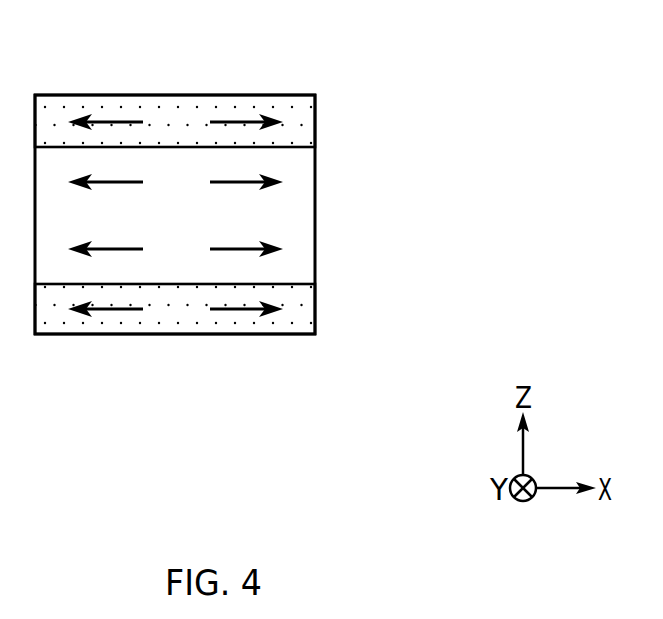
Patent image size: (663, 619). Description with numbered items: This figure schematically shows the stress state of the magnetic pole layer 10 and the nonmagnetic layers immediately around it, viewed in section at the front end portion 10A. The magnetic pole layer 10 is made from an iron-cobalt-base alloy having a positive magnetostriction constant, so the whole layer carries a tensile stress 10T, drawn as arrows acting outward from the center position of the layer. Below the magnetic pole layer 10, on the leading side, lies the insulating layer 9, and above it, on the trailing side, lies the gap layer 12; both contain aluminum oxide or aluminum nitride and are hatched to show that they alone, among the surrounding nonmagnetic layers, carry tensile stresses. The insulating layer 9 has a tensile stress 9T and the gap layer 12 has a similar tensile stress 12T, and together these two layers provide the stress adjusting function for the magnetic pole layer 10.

The front end portion 10A is at (315, 213).
The magnetic pole layer 10 is at (175, 214).
The gap layer 12 is at (315, 122).
The insulating layer 9 is at (315, 307).
The tensile stress 12T is at (108, 122).
The tensile stress 10T is at (117, 248).
The tensile stress 9T is at (112, 310).